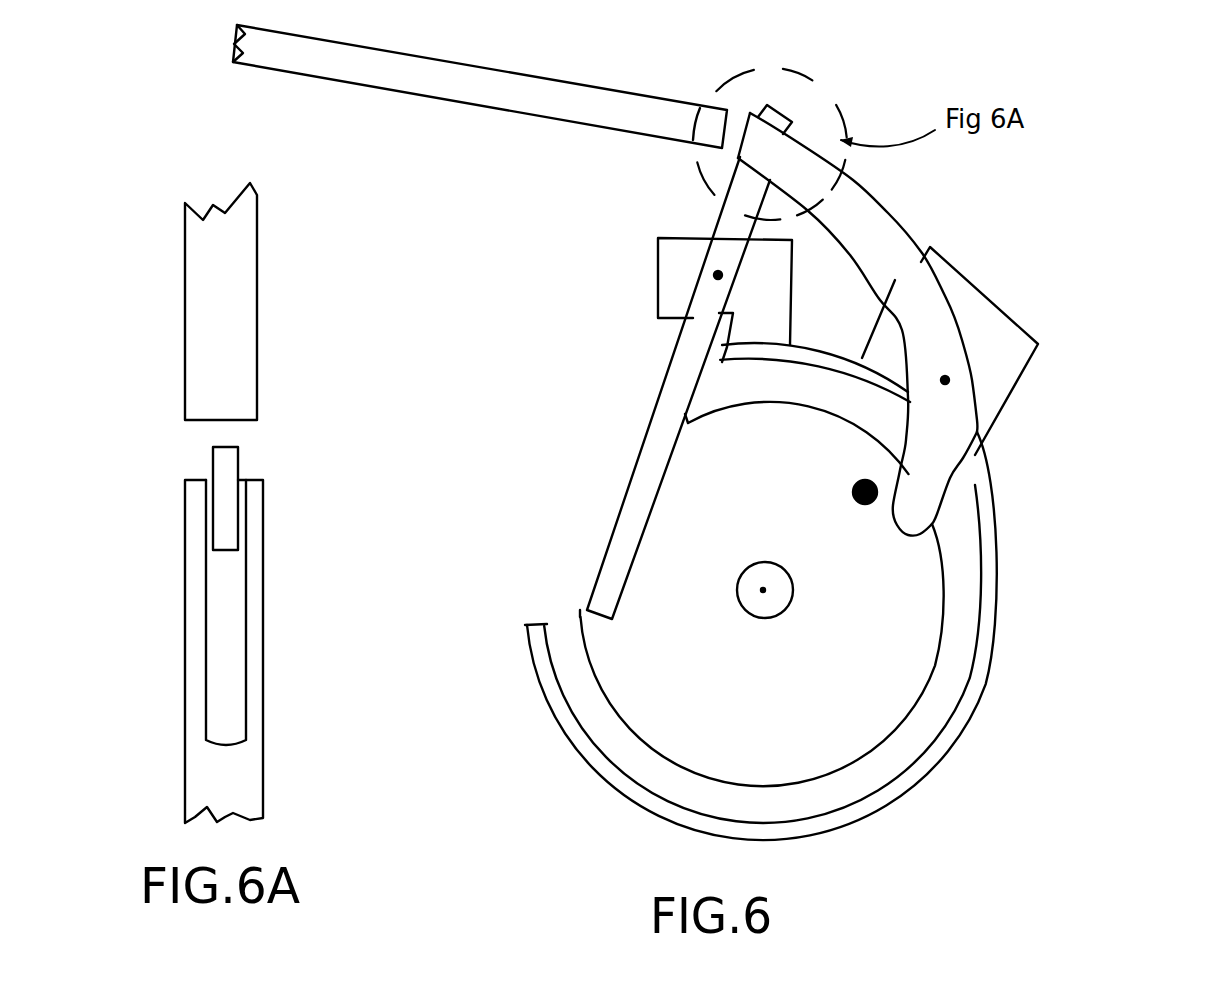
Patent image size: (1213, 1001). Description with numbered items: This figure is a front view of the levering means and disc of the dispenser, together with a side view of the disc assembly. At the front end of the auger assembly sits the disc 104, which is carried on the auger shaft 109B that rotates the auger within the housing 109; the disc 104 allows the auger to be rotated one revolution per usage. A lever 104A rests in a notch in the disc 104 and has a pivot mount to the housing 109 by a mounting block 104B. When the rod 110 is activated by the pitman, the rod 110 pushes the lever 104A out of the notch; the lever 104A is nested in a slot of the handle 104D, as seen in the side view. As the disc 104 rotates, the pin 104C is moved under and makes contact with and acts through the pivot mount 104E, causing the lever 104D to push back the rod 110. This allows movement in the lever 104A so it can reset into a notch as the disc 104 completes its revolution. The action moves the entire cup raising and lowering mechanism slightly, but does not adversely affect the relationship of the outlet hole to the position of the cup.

In FIG. 6, the rod 110 is at (560, 113).
In FIG. 6A, the rod 110 is at (246, 313).
In FIG. 6, the disc 104 is at (648, 674).
In FIG. 6, the lever 104A is at (620, 542).
In FIG. 6A, the lever 104A is at (238, 454).
In FIG. 6, the mounting block 104B is at (669, 300).
In FIG. 6, the pin 104C is at (870, 512).
In FIG. 6, the handle 104D is at (953, 406).
In FIG. 6A, the handle 104D is at (258, 778).
In FIG. 6, the pivot mount 104E is at (1003, 354).
In FIG. 6, the housing 109 is at (968, 712).
In FIG. 6, the auger shaft 109B is at (763, 617).